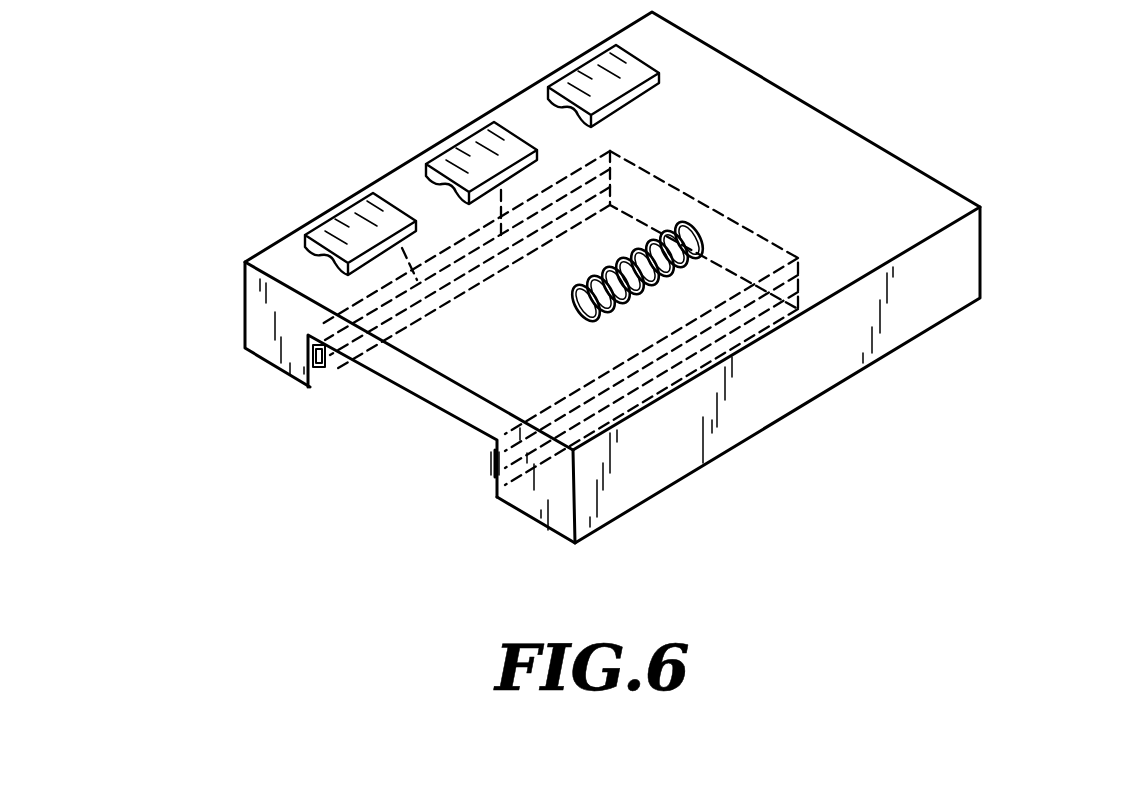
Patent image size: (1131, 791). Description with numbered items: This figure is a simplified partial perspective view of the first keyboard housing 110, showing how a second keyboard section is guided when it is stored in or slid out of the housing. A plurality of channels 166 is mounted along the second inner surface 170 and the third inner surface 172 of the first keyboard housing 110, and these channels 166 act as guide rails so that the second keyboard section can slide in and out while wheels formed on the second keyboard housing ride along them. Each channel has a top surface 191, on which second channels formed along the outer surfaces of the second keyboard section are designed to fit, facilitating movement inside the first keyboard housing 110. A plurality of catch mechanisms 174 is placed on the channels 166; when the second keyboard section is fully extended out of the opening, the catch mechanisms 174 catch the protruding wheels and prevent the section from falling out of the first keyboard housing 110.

The first keyboard housing 110 is at (940, 213).
The plurality of channels 166 is at (342, 205).
The second inner surface 170 is at (382, 290).
The third inner surface 172 is at (515, 398).
The plurality of catch mechanisms 174 is at (315, 372).
The top surface 191 is at (452, 135).